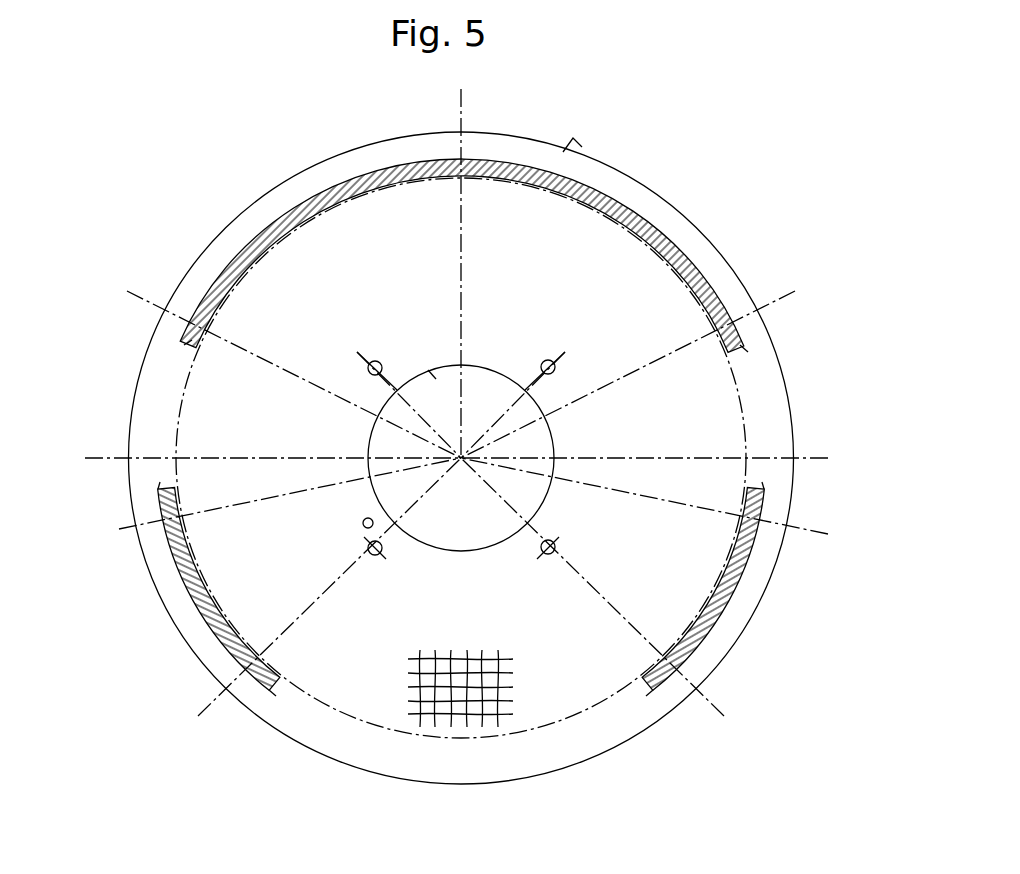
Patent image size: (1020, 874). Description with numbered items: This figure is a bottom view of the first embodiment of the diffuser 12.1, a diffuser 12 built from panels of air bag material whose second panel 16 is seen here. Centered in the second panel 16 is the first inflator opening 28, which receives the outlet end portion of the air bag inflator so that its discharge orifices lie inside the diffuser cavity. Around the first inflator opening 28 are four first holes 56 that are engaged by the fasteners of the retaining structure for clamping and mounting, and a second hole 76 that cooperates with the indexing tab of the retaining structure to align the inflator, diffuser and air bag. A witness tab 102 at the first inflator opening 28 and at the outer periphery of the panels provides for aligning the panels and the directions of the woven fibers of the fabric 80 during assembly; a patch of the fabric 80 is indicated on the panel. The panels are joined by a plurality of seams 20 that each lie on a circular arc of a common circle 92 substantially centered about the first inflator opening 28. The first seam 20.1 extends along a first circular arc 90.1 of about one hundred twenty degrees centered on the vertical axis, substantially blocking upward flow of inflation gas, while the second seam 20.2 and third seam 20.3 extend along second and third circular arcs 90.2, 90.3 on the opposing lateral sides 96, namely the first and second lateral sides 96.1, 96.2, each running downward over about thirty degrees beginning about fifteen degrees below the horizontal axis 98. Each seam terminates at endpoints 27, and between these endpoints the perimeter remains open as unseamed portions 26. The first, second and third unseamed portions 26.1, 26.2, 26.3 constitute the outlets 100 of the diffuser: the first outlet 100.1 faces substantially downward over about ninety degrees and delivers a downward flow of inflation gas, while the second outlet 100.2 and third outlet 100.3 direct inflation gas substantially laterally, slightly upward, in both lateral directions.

The diffuser 12 is at (466, 458).
The first embodiment of the diffuser 12.1 is at (697, 192).
The second panel 16 is at (438, 766).
The seam 20 is at (463, 402).
The first seam 20.1 is at (497, 233).
The second seam 20.2 is at (166, 589).
The third seam 20.3 is at (758, 589).
The unseamed portion 26 is at (473, 503).
The first unseamed portion 26.1 is at (594, 675).
The second unseamed portion 26.2 is at (258, 433).
The third unseamed portion 26.3 is at (705, 433).
The endpoints 27 is at (188, 350).
The first inflator opening 28 is at (538, 440).
The first holes 56 is at (380, 363).
The second hole 76 is at (362, 521).
The fabric 80 is at (490, 650).
The common circle 92 is at (327, 708).
The lateral sides 96 is at (464, 349).
The first lateral side 96.1 is at (140, 372).
The second lateral side 96.2 is at (786, 372).
The horizontal axis 98 is at (830, 458).
The outlets 100 is at (464, 618).
The first outlet 100.1 is at (385, 790).
The second outlet 100.2 is at (110, 412).
The third outlet 100.3 is at (818, 408).
The witness tab 102 is at (572, 142).
The first circular arc 90.1 is at (707, 283).
The second circular arc 90.2 is at (217, 635).
The third circular arc 90.3 is at (703, 633).